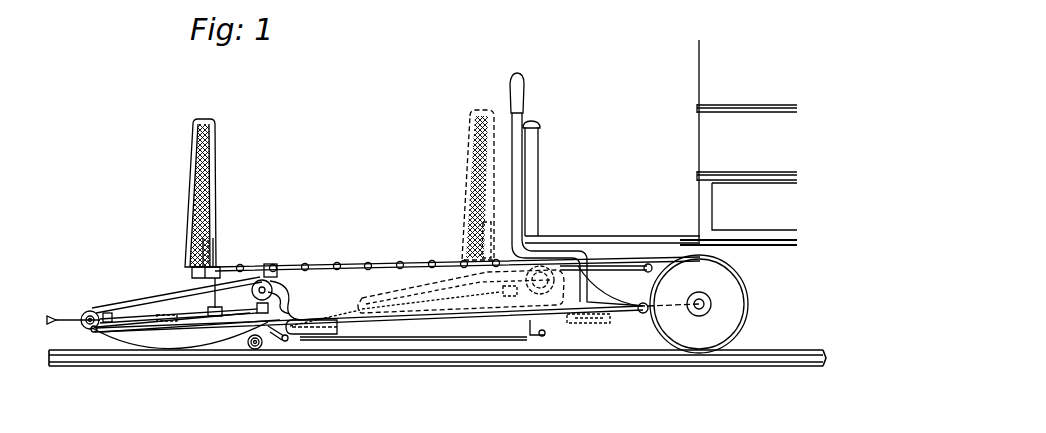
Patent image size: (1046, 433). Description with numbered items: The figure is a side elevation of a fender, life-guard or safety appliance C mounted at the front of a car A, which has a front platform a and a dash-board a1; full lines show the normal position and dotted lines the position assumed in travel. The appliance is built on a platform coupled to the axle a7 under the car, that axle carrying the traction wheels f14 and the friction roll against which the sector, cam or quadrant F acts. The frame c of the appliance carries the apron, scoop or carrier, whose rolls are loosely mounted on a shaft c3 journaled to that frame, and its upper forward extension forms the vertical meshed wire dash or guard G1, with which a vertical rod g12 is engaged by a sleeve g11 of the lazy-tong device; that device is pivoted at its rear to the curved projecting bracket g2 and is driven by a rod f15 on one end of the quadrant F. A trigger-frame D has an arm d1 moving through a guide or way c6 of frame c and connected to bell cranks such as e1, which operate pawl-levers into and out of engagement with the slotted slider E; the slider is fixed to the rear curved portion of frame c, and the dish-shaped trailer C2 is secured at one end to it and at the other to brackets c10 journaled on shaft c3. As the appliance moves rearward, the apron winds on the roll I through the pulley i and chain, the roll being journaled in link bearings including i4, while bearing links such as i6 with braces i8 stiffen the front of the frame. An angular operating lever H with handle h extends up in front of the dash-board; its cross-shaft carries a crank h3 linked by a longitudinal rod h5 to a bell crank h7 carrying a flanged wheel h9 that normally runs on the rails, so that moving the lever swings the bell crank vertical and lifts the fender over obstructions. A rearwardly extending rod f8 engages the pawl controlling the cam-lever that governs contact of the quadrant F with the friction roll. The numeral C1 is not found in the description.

The car A is at (738, 142).
The front platform a is at (609, 246).
The dash-board a1 is at (531, 185).
The axle a7 is at (704, 302).
The traction wheel f14 is at (738, 325).
The angular operating lever H is at (515, 148).
The handle h is at (523, 91).
The vertical meshed wire dash or guard G1 is at (183, 193).
The vertical rod g12 is at (213, 165).
The sleeve g11 is at (215, 242).
The curved projecting bracket g2 is at (579, 258).
The roll I is at (272, 282).
The pulley i is at (252, 292).
The link bearing i4 is at (272, 266).
The bearing link i6 is at (218, 276).
The brace i8 is at (190, 300).
The slotted slider E is at (300, 330).
The fender, life-guard or safety appliance C is at (177, 290).
The lower lever bar C1 is at (130, 330).
The trailer C2 is at (162, 348).
The frame c is at (232, 315).
The shaft c3 is at (77, 326).
The guide or way c6 is at (108, 312).
The bracket c10 is at (93, 332).
The bell crank e1 is at (180, 322).
The arm d1 is at (68, 318).
The trigger-frame D is at (50, 315).
The flanged wheel h9 is at (256, 350).
The bell crank h7 is at (286, 342).
The longitudinal rod h5 is at (418, 342).
The crank h3 is at (540, 337).
The rod f8 is at (480, 326).
The rod f15 is at (628, 252).
The sector, cam or quadrant F is at (648, 264).